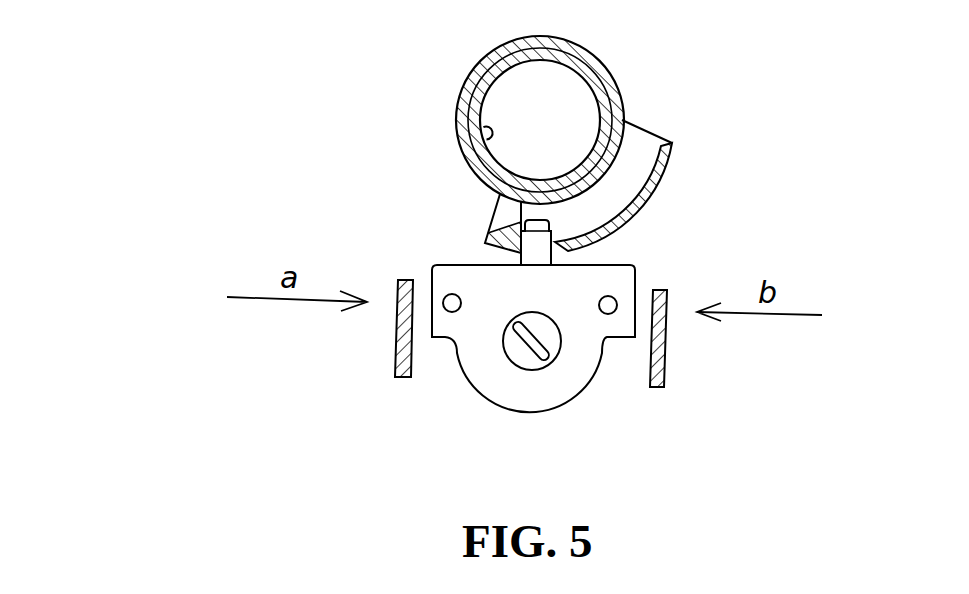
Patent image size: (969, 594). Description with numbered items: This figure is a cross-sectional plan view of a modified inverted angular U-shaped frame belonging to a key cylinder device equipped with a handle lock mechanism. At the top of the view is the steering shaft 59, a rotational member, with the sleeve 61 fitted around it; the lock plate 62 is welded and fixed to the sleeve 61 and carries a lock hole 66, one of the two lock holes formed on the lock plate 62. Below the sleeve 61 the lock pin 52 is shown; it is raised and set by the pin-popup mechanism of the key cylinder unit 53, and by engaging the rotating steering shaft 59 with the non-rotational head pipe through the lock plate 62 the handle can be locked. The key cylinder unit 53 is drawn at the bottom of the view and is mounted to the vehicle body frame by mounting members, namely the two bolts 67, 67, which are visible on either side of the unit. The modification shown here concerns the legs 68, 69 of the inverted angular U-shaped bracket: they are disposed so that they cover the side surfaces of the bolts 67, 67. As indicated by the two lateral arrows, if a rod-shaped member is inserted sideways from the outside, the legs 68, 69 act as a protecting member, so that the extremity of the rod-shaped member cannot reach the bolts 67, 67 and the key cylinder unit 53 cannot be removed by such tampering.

The sleeve 61 is at (467, 85).
The steering shaft 59 is at (460, 146).
The lock pin 52 is at (488, 220).
The lock hole 66 is at (664, 186).
The lock plate 62 is at (618, 229).
The key cylinder unit 53 is at (560, 412).
The bolts 67 is at (452, 305).
The left leg 68 is at (394, 332).
The right leg 69 is at (667, 337).